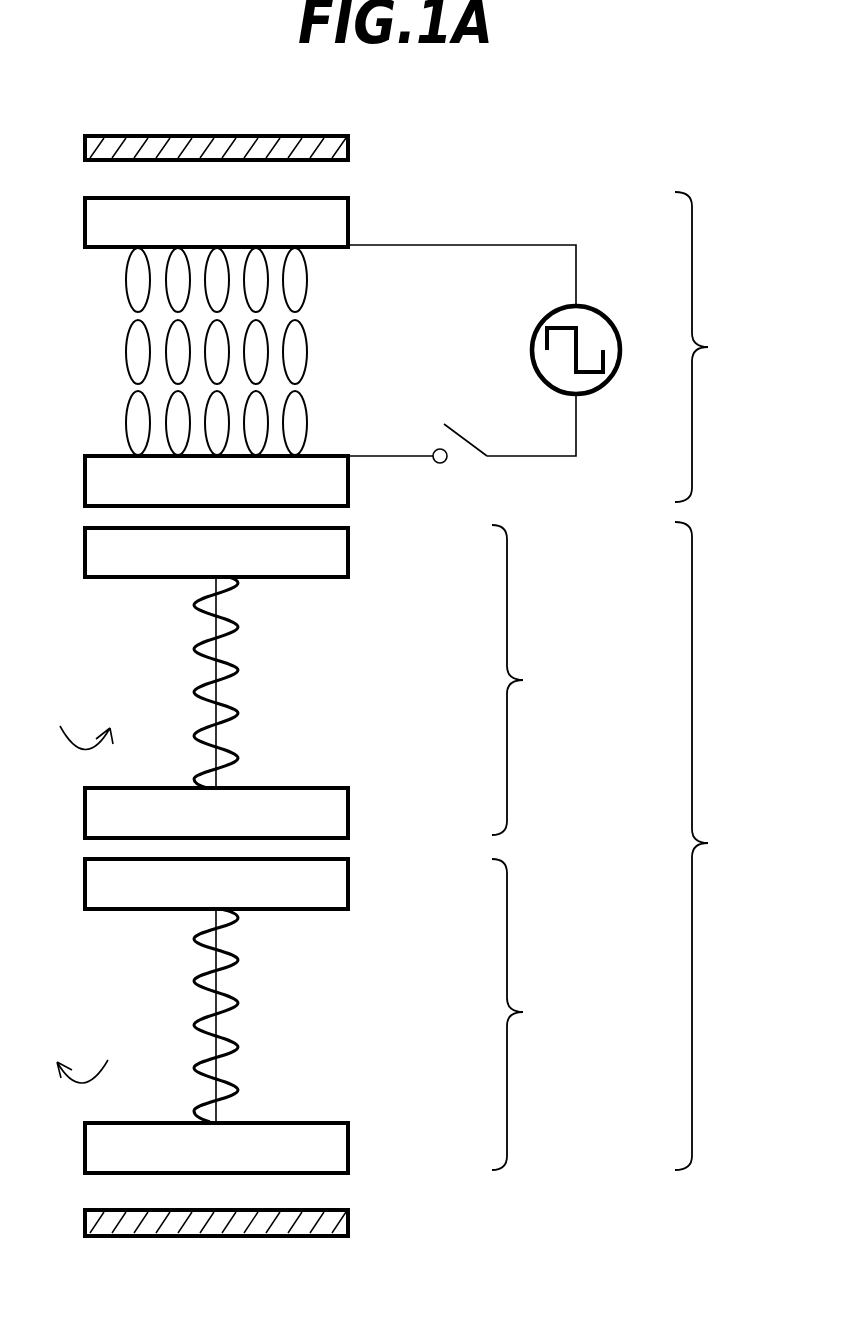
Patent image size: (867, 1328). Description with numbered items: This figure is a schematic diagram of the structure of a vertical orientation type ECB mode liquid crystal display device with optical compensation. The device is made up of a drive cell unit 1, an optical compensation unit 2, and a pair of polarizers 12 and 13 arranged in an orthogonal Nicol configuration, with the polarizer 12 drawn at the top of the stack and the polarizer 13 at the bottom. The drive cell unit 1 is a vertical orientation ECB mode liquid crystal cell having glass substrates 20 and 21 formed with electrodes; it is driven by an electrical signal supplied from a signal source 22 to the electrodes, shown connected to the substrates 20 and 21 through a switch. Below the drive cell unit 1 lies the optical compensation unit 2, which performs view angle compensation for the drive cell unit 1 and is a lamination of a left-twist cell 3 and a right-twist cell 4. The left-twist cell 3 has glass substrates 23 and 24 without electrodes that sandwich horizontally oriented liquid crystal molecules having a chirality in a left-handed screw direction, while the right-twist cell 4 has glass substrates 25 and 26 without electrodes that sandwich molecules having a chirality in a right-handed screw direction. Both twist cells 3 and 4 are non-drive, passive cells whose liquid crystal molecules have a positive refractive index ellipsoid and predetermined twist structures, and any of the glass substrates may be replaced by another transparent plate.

The drive cell unit 1 is at (706, 347).
The optical compensation unit 2 is at (705, 846).
The left-twist cell 3 is at (522, 680).
The right-twist cell 4 is at (522, 1014).
The polarizer 12 is at (348, 148).
The polarizer 13 is at (348, 1223).
The glass substrate 20 is at (348, 222).
The glass substrate 21 is at (348, 478).
The pulse power source 22 is at (603, 314).
The glass substrate 23 is at (348, 550).
The glass substrate 24 is at (348, 813).
The glass substrate 25 is at (348, 885).
The glass substrate 26 is at (348, 1145).